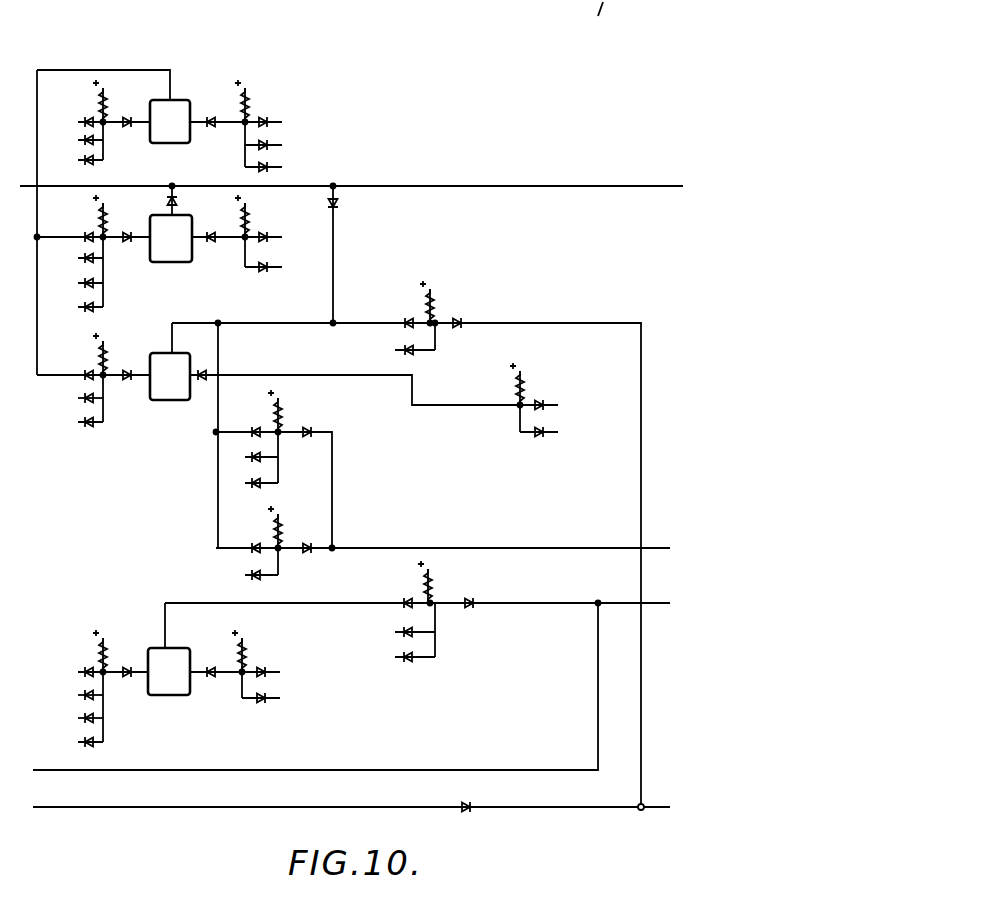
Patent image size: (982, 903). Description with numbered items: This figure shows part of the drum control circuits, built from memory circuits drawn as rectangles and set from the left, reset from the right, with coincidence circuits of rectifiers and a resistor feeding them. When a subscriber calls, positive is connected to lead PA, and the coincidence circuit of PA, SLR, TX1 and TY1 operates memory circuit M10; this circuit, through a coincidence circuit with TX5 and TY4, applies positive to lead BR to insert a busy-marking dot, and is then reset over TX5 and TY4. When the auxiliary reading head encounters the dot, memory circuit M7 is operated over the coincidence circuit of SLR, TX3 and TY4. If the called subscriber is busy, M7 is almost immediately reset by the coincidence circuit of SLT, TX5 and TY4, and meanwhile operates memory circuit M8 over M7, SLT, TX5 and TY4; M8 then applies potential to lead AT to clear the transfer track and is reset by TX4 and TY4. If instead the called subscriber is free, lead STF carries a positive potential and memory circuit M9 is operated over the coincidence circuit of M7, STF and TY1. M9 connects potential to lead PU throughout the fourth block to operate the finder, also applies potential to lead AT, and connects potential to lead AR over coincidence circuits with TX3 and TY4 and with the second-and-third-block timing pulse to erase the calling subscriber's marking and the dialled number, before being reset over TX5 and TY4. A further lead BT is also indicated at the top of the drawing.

The memory circuit M7 is at (159, 251).
The memory circuit M8 is at (216, 231).
The memory circuit M9 is at (337, 428).
The memory circuit M10 is at (279, 651).
The register track reading head output SLR is at (70, 409).
The transfer track reading head output SLT is at (181, 190).
The timing pulse TX3 is at (159, 300).
The timing pulse TY4 is at (319, 429).
The timing pulse TX5 is at (320, 409).
The timing pulse TX4 is at (285, 237).
The lead STF is at (70, 398).
The timing pulse TY1 is at (70, 583).
The timing pulse TX1 is at (70, 719).
The lead PA is at (71, 672).
The lead AT is at (647, 186).
The lead AR is at (664, 566).
The lead BR is at (419, 618).
The lead PU is at (536, 323).
The BT line BT is at (610, 22).